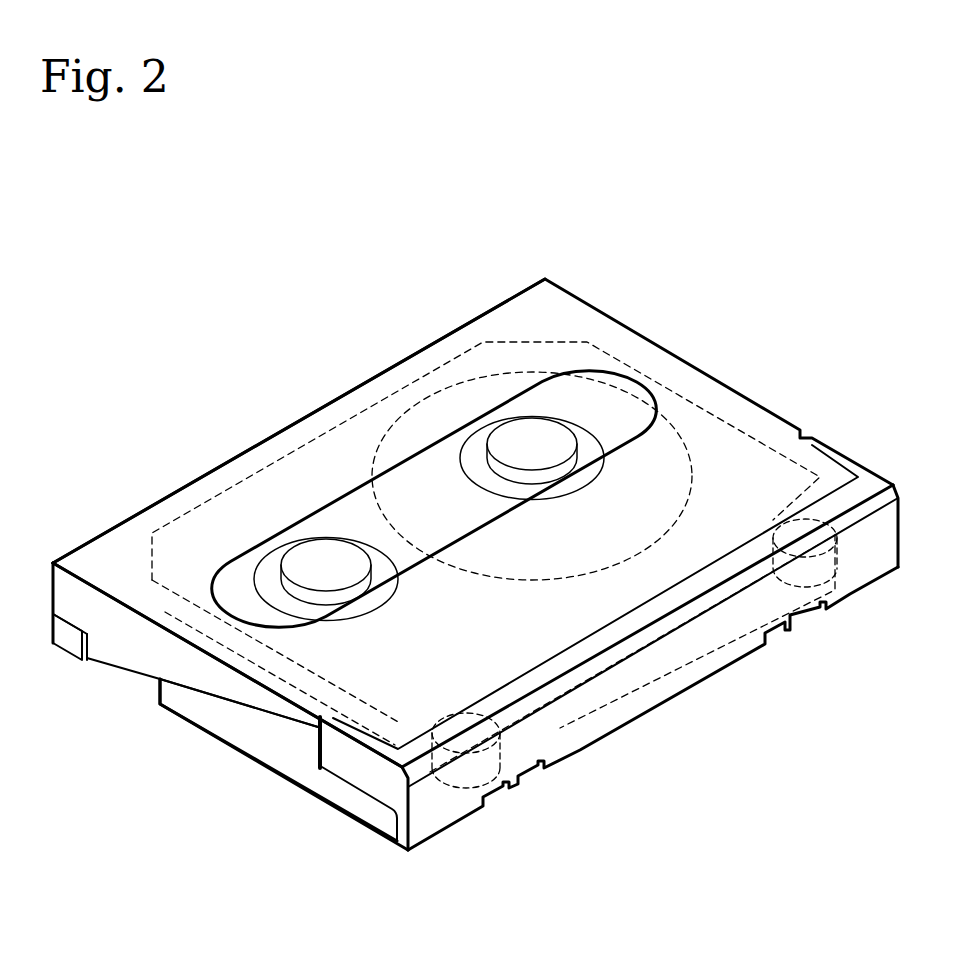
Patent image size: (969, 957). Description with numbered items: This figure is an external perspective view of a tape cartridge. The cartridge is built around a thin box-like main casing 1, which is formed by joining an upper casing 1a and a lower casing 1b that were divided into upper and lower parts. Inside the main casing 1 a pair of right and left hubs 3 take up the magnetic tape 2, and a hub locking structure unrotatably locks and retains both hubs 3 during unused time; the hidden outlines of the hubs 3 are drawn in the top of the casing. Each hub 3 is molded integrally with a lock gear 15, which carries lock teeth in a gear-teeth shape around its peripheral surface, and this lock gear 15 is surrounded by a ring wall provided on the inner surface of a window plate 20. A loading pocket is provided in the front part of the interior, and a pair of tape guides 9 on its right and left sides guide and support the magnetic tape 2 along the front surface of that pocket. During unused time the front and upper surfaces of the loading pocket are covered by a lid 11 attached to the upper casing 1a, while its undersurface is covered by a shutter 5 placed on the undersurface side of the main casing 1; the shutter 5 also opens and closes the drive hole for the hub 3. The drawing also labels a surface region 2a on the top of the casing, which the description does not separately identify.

The main casing 1 is at (412, 322).
The upper casing 1a is at (98, 553).
The lower casing 1b is at (70, 640).
The magnetic tape 2 is at (618, 690).
The recess in top plate 2a is at (435, 400).
The hub 3 is at (270, 568).
The shutter 5 is at (222, 730).
The tape guide 9 is at (468, 712).
The lid 11 is at (692, 682).
The lock gear 15 is at (290, 557).
The window plate 20 is at (323, 433).